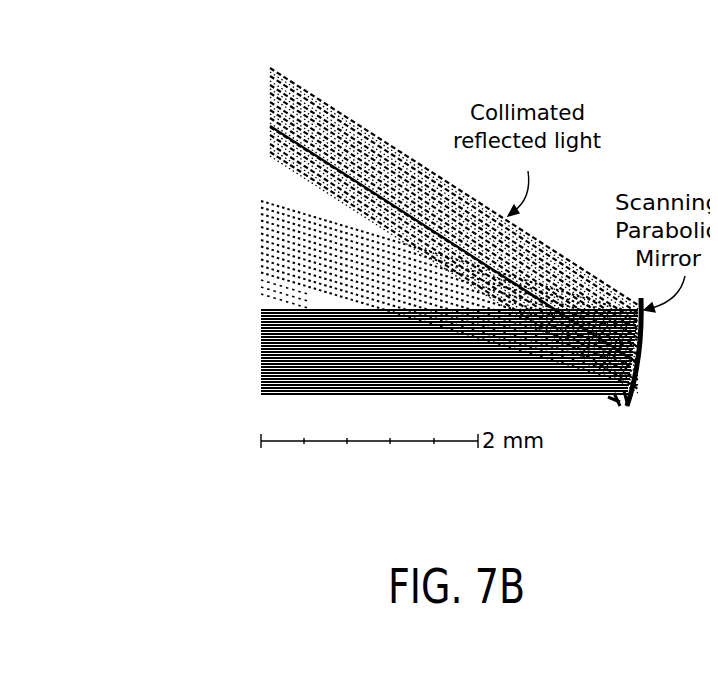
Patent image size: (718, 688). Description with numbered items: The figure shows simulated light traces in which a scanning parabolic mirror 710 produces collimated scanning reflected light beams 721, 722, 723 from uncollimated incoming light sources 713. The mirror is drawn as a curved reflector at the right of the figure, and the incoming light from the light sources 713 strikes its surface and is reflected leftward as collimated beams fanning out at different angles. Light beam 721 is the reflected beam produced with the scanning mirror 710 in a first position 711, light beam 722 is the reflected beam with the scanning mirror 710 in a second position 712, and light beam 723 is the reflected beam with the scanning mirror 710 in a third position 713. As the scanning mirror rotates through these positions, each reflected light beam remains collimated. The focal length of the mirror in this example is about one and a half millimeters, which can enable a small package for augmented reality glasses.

The scanning parabolic mirror 710 is at (661, 352).
The first position 711 is at (598, 393).
The second position 712 is at (606, 399).
The third position 713 is at (620, 399).
The collimated scanning reflected light beam 721 is at (419, 352).
The collimated scanning reflected light beam 722 is at (419, 293).
The collimated scanning reflected light beam 723 is at (419, 230).